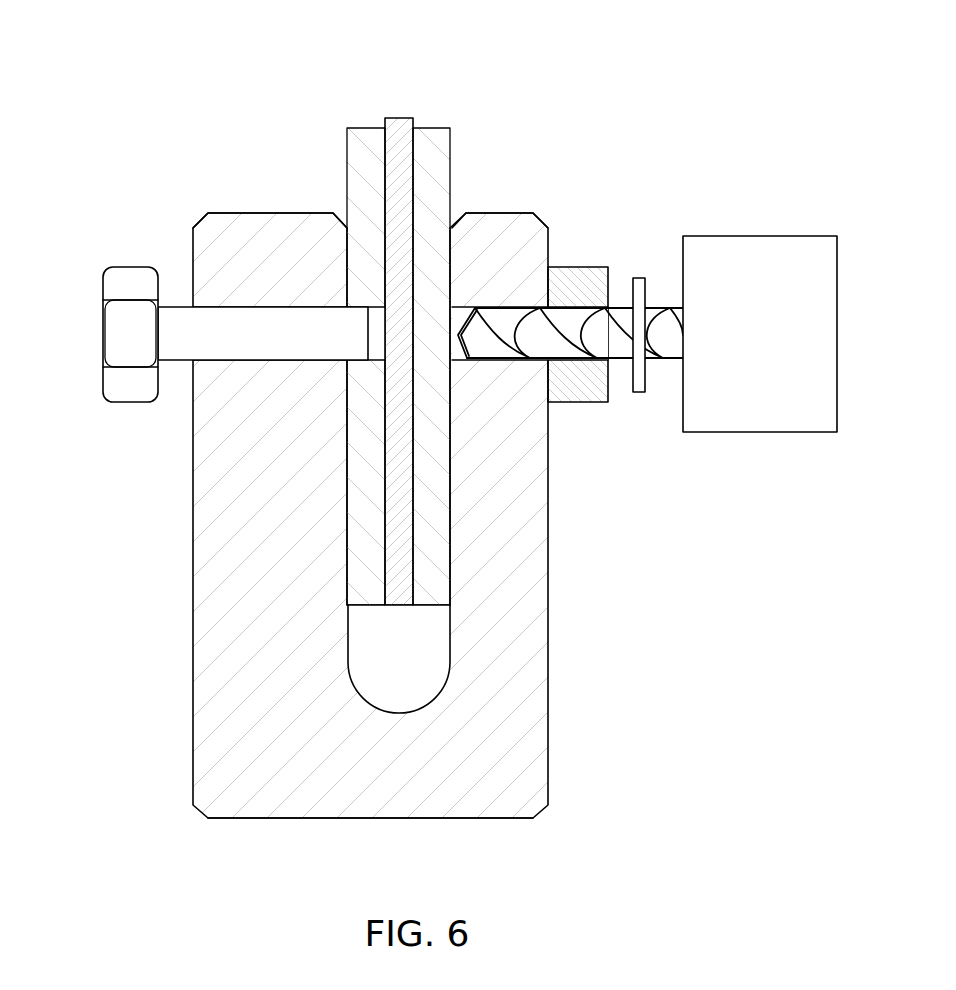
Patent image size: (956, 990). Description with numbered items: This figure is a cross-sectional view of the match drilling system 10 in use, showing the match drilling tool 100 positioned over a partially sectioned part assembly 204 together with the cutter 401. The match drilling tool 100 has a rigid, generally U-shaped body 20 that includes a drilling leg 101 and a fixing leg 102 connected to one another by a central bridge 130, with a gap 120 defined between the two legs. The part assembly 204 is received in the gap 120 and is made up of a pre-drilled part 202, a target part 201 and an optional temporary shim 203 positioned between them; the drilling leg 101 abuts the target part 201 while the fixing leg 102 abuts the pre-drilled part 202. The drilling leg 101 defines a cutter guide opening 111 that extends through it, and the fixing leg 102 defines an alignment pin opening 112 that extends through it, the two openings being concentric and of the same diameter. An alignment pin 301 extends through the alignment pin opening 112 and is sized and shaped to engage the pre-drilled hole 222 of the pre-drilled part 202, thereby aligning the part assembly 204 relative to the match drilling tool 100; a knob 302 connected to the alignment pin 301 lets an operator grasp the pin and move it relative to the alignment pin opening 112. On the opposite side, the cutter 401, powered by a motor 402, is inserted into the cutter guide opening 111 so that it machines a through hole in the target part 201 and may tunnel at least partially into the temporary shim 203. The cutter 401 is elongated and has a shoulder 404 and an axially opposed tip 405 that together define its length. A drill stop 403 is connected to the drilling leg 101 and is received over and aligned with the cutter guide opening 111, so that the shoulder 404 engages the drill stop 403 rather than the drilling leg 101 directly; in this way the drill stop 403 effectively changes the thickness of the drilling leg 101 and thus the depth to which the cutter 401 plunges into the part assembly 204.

The match drilling system 10 is at (578, 70).
The body 20 is at (548, 735).
The match drilling tool 100 is at (169, 780).
The drilling leg 101 is at (500, 213).
The fixing leg 102 is at (193, 252).
The cutter guide opening 111 is at (458, 306).
The alignment pin opening 112 is at (292, 362).
The gap 120 is at (383, 674).
The central bridge 130 is at (372, 818).
The target part 201 is at (450, 152).
The pre-drilled part 202 is at (347, 152).
The shim 203 is at (371, 346).
The part assembly 204 is at (398, 313).
The pre-drilled hole 222 is at (377, 305).
The alignment pin 301 is at (177, 362).
The knob 302 is at (103, 300).
The cutter 401 is at (570, 363).
The motor 402 is at (755, 432).
The drill stop 403 is at (578, 402).
The shoulder 404 is at (637, 278).
The tip 405 is at (470, 360).